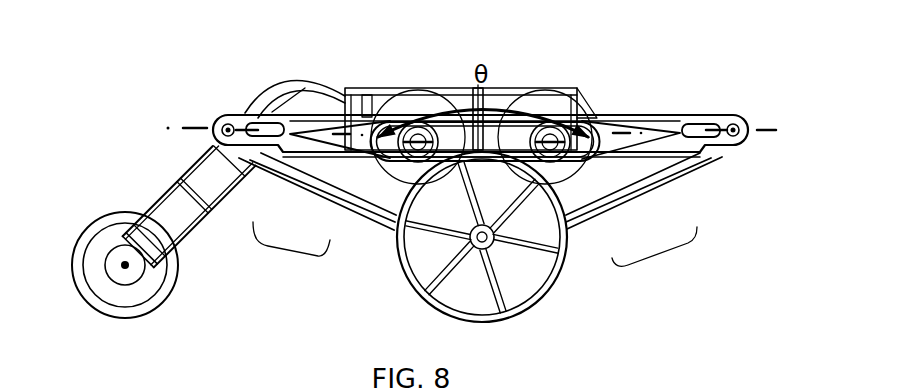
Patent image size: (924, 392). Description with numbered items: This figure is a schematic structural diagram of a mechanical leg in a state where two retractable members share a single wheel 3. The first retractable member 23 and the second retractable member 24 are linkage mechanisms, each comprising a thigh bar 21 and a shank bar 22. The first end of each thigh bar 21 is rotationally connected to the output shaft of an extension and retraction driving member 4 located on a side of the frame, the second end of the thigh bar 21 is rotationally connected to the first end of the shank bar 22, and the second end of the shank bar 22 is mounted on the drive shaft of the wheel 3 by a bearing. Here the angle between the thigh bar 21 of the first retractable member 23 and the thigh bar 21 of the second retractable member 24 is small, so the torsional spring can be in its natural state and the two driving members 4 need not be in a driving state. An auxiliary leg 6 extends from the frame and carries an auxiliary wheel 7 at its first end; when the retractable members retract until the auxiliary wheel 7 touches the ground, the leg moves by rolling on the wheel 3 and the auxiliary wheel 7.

The wheel 3 is at (432, 266).
The extension and retraction driving member 4 is at (416, 102).
The auxiliary leg 6 is at (196, 174).
The auxiliary wheel 7 is at (113, 223).
The thigh bar 21 is at (292, 138).
The shank bar 22 is at (324, 174).
The first retractable member 23 is at (291, 250).
The second retractable member 24 is at (654, 256).